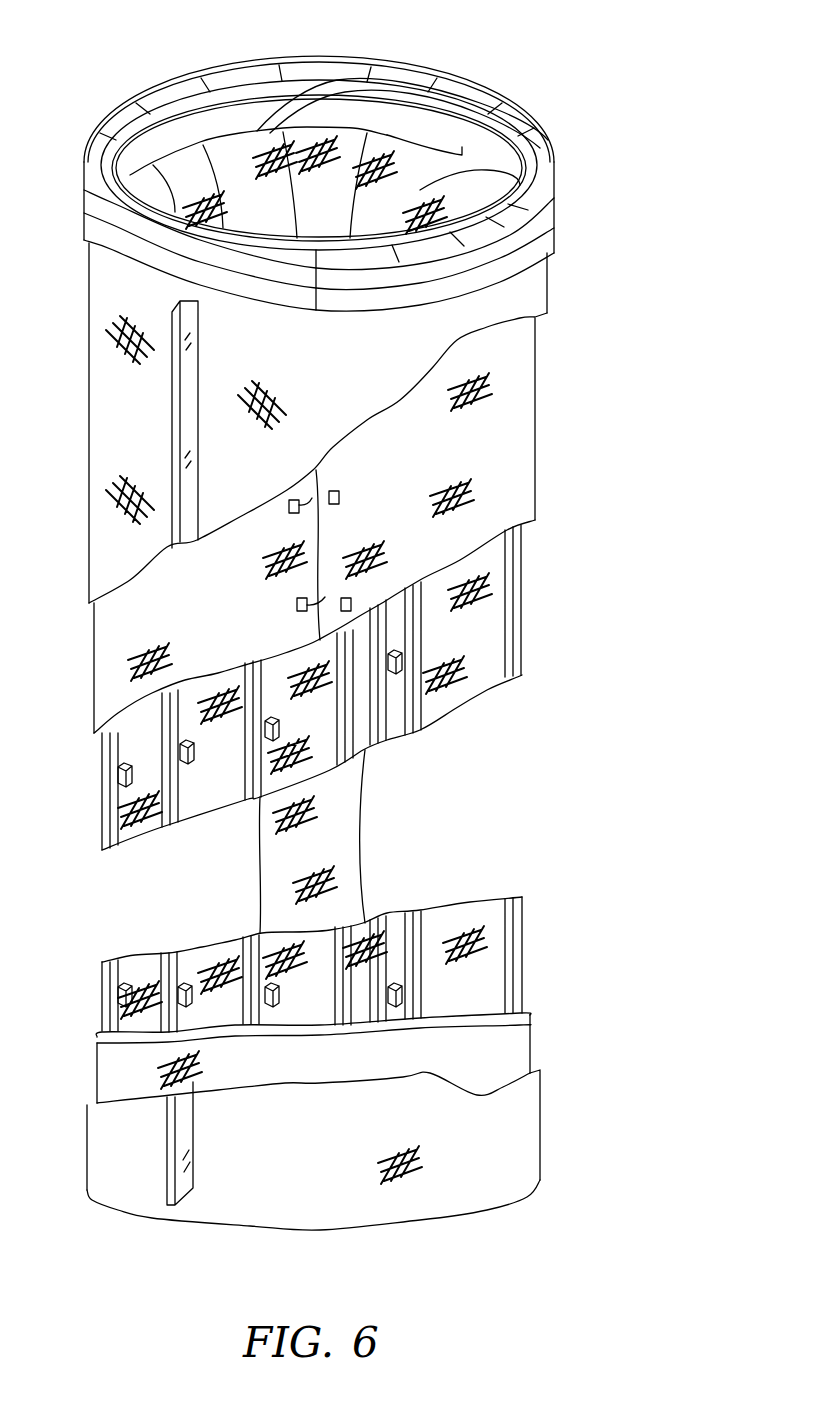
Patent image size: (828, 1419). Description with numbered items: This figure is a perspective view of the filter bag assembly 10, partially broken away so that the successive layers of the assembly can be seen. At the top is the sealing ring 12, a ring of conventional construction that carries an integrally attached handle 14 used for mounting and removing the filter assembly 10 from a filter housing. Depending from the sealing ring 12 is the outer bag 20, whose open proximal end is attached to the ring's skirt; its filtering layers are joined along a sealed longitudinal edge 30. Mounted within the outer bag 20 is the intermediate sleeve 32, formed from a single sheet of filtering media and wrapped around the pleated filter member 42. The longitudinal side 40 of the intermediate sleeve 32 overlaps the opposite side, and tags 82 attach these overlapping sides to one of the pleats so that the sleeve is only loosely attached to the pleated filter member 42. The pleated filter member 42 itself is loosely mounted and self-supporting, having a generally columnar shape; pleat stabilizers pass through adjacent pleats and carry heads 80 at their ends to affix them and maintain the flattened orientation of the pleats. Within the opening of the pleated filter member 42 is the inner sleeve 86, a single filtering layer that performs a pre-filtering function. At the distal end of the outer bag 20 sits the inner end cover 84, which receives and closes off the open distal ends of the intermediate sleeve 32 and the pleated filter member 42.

The filter bag assembly 10 is at (617, 391).
The sealing ring 12 is at (523, 116).
The handle 14 is at (395, 112).
The outer bag 20 is at (516, 294).
The sealed longitudinal edge 30 is at (182, 1145).
The intermediate sleeve 32 is at (506, 369).
The longitudinal side 40 is at (330, 478).
The pleated filter member 42 is at (459, 615).
The heads 80 is at (118, 772).
The tags 82 is at (336, 492).
The inner end cover 84 is at (541, 1044).
The inner sleeve 86 is at (345, 842).